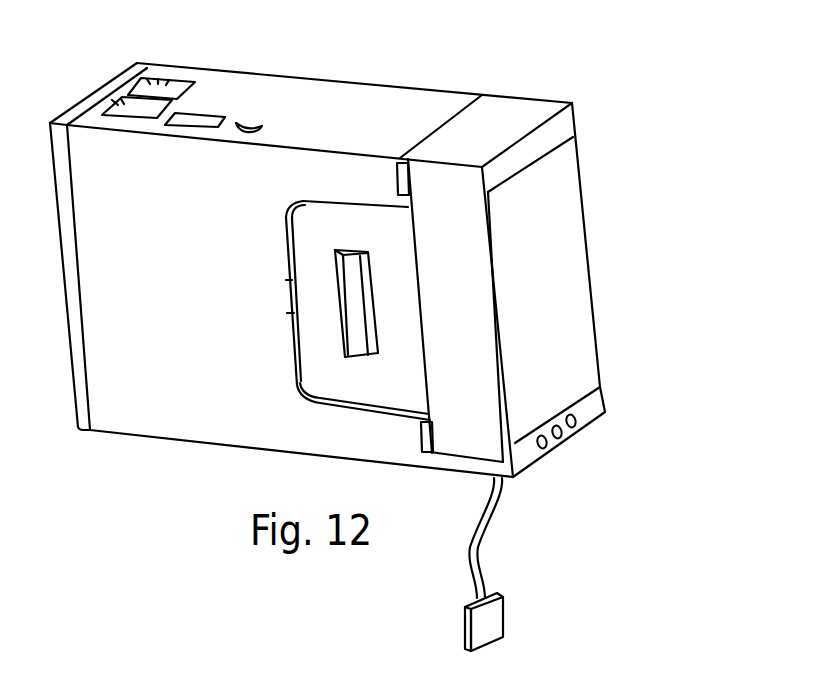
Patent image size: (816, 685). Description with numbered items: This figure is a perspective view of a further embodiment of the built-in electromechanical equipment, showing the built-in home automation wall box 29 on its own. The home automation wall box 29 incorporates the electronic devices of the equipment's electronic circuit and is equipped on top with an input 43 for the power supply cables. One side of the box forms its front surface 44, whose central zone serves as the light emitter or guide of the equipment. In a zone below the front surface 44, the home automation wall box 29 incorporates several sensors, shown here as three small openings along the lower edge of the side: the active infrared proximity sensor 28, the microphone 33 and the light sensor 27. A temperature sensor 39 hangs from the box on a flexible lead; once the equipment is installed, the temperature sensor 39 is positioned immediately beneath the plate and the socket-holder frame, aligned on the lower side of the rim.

The built-in home automation wall box 29 is at (360, 80).
The input of the power supply cables 43 is at (167, 88).
The front surface 44 is at (553, 302).
The active infrared proximity sensor 28 is at (542, 448).
The microphone 33 is at (557, 438).
The light sensor 27 is at (572, 425).
The temperature sensor 39 is at (492, 623).